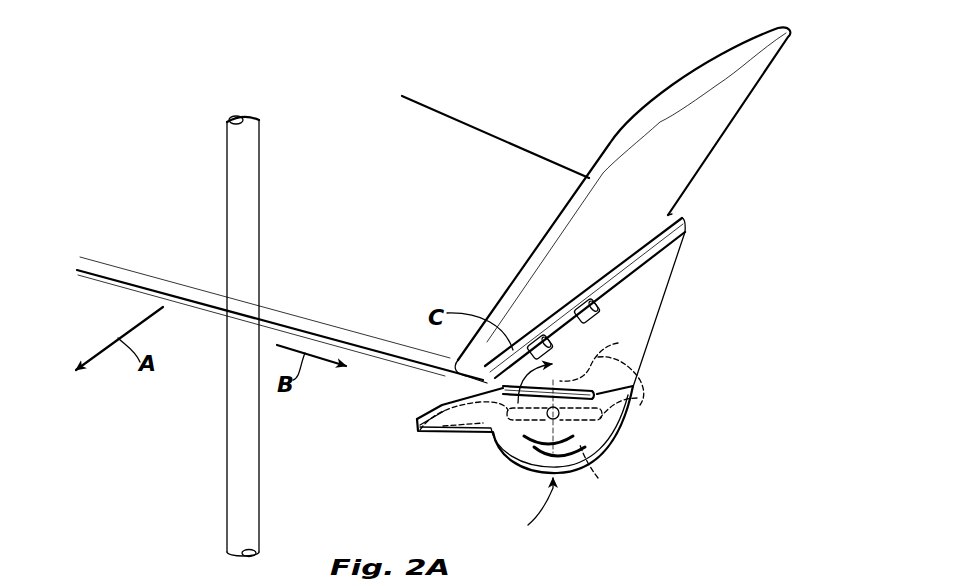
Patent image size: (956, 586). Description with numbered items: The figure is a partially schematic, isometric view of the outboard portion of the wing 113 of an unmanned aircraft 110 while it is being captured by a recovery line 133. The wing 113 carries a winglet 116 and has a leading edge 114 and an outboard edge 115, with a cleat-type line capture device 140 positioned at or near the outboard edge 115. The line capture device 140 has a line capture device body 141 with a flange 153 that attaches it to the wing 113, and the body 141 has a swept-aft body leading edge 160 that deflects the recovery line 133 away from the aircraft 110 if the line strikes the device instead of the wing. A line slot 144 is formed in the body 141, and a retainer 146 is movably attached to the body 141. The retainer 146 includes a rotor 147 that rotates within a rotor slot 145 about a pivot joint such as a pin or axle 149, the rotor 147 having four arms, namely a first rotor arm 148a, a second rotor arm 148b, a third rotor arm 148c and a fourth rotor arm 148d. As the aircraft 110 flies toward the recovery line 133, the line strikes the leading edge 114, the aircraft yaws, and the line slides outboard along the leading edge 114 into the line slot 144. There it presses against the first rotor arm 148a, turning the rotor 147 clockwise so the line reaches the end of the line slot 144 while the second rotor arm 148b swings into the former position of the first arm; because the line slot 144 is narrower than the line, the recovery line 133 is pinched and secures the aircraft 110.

The aircraft 110 is at (591, 211).
The wing 113 is at (513, 158).
The leading edge 114 is at (110, 273).
The outboard edge 115 is at (538, 314).
The winglet 116 is at (690, 87).
The recovery line 133 is at (232, 463).
The line capture device 140 is at (567, 434).
The line capture device body 141 is at (512, 462).
The line slot 144 is at (460, 383).
The rotor slot 145 is at (525, 509).
The retainer 146 is at (596, 429).
The rotor 147 is at (600, 401).
The first rotor arm 148a is at (618, 343).
The second rotor arm 148b is at (418, 433).
The third rotor arm 148c is at (598, 478).
The fourth rotor arm 148d is at (637, 398).
The pin or axle 149 is at (590, 462).
The flange 153 is at (588, 277).
The body leading edge 160 is at (463, 433).